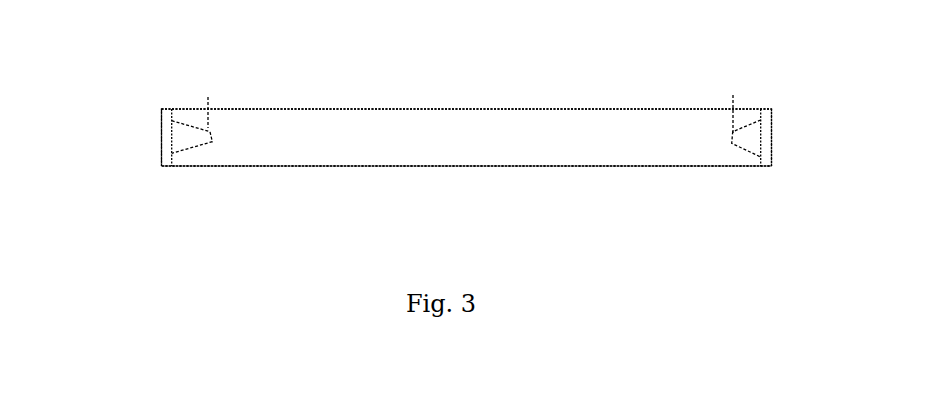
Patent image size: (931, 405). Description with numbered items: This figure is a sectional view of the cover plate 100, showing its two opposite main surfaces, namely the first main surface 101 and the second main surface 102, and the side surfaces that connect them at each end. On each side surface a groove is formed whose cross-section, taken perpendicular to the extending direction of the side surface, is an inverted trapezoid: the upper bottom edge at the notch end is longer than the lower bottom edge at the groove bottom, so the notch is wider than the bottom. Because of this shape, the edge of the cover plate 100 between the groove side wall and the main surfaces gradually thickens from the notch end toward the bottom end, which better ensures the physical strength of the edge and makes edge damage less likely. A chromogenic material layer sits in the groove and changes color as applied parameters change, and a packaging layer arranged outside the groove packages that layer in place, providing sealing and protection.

The cover plate 100 is at (423, 89).
The first main surface 101 is at (348, 108).
The second main surface 102 is at (377, 166).